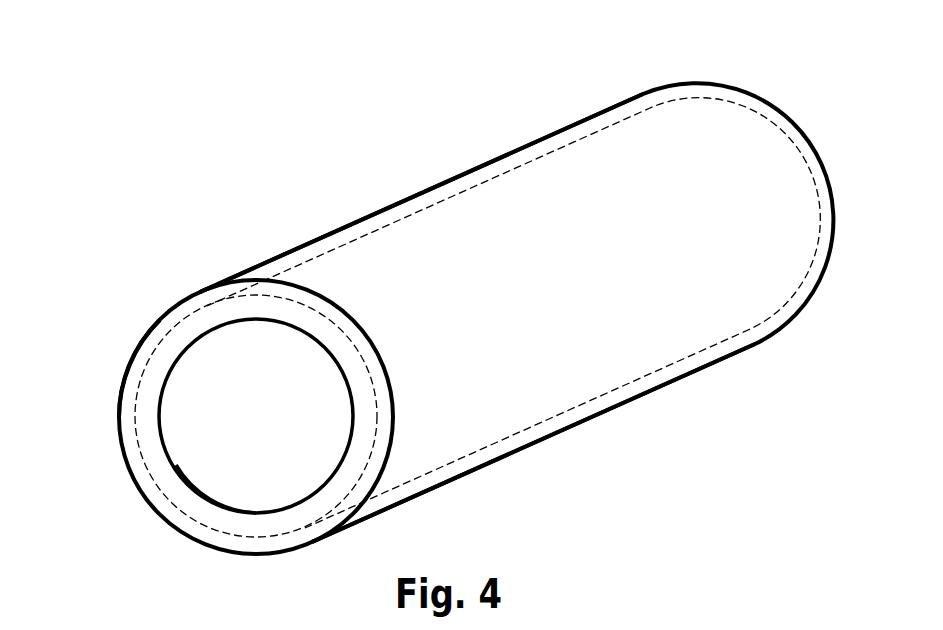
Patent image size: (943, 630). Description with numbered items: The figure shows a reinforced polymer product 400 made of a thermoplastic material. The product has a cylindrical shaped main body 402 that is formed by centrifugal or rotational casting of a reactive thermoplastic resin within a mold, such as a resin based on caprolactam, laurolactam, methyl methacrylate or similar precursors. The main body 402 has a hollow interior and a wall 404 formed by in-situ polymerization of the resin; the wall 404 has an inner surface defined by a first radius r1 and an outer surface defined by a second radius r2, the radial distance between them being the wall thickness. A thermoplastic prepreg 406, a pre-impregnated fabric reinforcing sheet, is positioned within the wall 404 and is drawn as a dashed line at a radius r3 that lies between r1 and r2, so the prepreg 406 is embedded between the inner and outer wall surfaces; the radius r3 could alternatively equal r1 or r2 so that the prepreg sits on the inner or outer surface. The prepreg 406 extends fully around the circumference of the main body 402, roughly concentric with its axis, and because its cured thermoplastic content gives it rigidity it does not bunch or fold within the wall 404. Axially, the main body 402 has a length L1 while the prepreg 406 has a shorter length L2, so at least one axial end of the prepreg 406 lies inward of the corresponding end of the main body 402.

The reinforced polymer product 400 is at (795, 84).
The cylindrical shaped main body 402 is at (594, 418).
The wall 404 is at (314, 328).
The thermoplastic prepreg 406 is at (163, 340).
The axial length of the main body L1 is at (551, 133).
The axial length of the thermoplastic prepreg L2 is at (452, 194).
The first radius r1 is at (205, 498).
The second radius r2 is at (116, 428).
The radius of the thermoplastic prepreg r3 is at (183, 510).